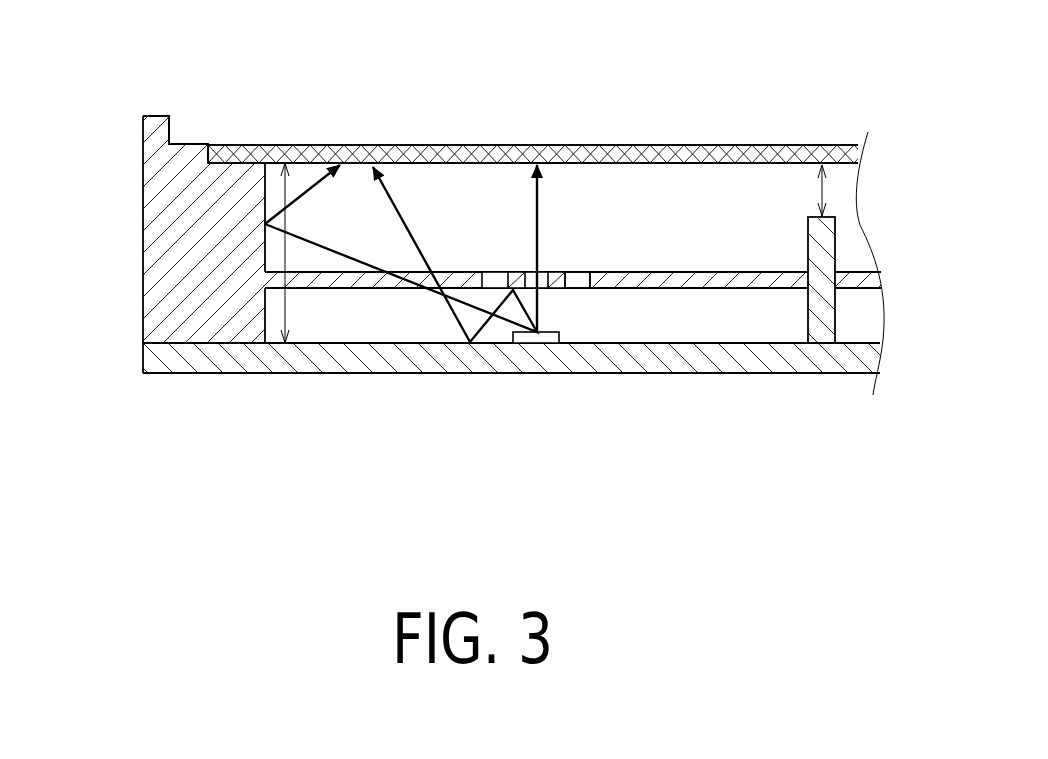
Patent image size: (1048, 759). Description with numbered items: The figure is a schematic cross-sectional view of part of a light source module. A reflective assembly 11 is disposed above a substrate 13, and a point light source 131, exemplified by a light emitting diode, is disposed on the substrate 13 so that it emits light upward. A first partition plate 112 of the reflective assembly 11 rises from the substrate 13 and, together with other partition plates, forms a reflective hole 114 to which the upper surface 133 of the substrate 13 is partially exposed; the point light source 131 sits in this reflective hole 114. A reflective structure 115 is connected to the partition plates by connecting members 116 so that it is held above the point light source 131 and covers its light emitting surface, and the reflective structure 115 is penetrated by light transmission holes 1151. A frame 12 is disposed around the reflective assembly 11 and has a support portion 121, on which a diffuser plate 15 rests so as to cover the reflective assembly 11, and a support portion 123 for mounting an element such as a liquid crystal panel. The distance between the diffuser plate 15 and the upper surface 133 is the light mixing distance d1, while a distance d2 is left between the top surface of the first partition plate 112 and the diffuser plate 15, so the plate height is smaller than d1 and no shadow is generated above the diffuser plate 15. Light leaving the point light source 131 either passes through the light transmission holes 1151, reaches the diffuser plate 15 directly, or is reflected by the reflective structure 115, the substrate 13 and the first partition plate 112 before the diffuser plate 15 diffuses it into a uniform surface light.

The reflective assembly 11 is at (343, 267).
The frame 12 is at (172, 227).
The support portion 121 is at (238, 146).
The support portion 123 is at (190, 146).
The substrate 13 is at (615, 377).
The point light source 131 is at (533, 337).
The upper surface of the substrate 133 is at (702, 330).
The diffuser plate 15 is at (400, 146).
The first partition plate 112 is at (827, 247).
The reflective hole 114 is at (762, 322).
The reflective structure 115 is at (517, 277).
The light transmission hole 1151 is at (580, 273).
The connecting member 116 is at (660, 282).
The light mixing distance d1 is at (285, 307).
The distance d2 is at (822, 193).